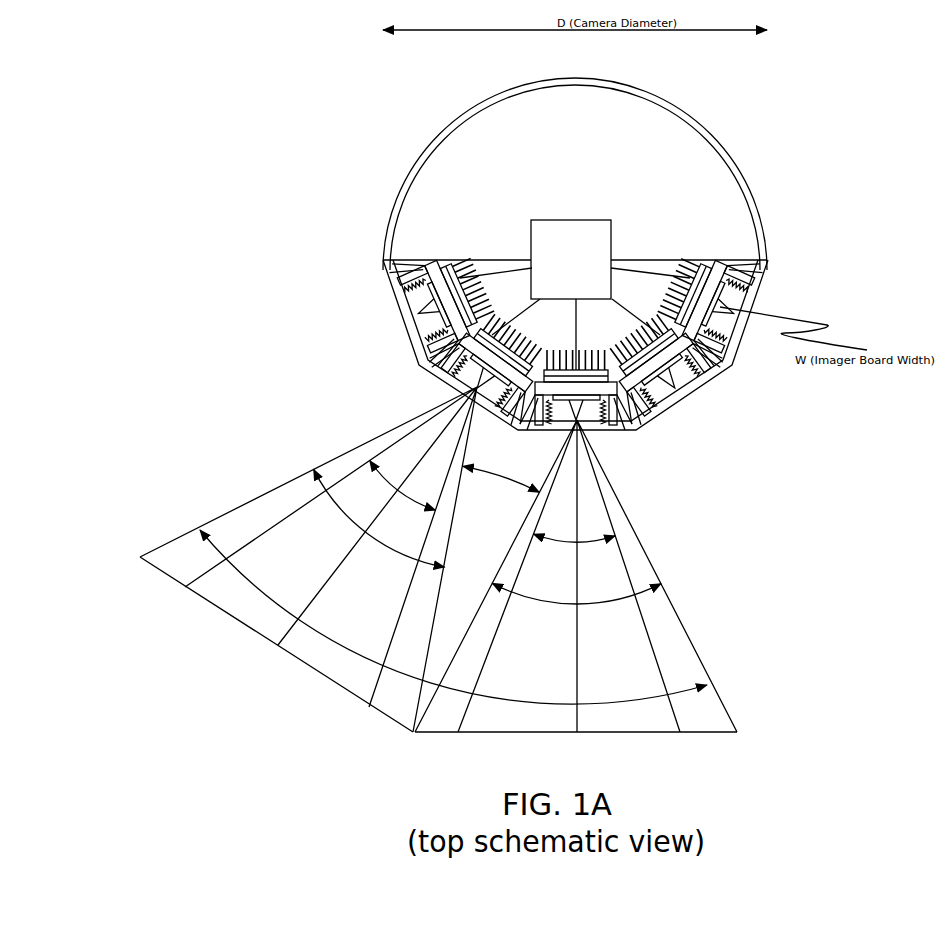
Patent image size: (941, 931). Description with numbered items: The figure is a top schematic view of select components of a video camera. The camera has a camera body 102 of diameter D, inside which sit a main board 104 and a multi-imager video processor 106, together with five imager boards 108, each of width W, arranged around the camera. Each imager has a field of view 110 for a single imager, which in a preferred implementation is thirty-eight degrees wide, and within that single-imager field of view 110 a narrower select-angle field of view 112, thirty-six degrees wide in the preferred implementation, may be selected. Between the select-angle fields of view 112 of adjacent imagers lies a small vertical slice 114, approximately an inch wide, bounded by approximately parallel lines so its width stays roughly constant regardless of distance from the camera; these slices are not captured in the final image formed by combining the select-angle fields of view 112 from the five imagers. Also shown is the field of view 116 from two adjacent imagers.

The camera body 102 is at (710, 127).
The main board 104 is at (728, 230).
The multi-imager video processor 106 is at (531, 220).
The imager boards 108 is at (707, 375).
The field of view for a single imager 110 is at (438, 559).
The select-angle field of view 112 is at (493, 502).
The small vertical slice 114 is at (501, 474).
The field of view from two adjacent imagers 116 is at (453, 626).